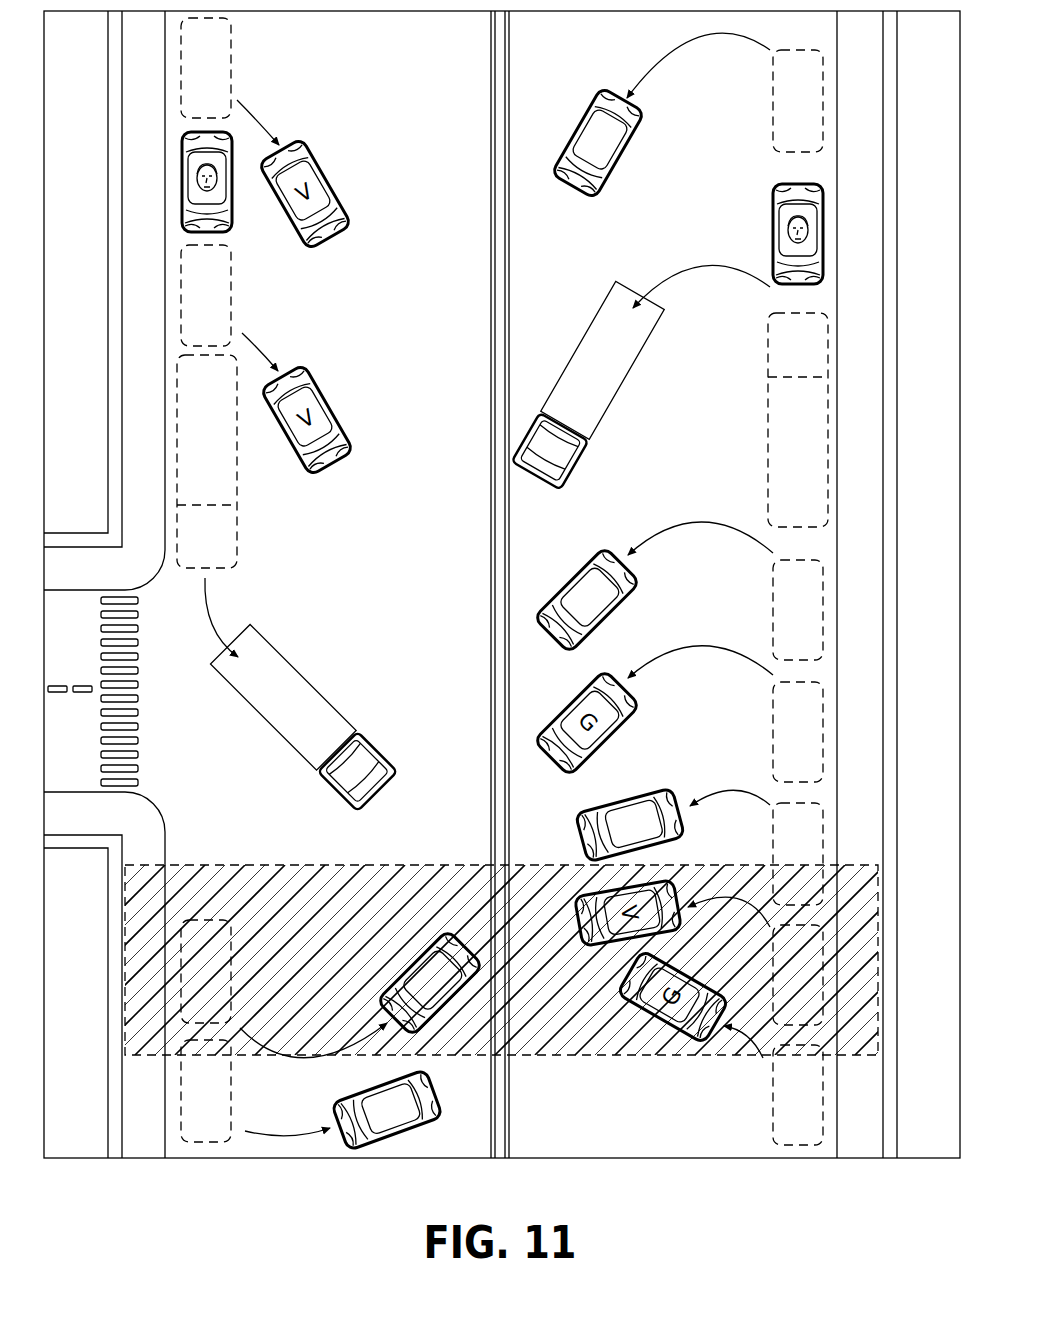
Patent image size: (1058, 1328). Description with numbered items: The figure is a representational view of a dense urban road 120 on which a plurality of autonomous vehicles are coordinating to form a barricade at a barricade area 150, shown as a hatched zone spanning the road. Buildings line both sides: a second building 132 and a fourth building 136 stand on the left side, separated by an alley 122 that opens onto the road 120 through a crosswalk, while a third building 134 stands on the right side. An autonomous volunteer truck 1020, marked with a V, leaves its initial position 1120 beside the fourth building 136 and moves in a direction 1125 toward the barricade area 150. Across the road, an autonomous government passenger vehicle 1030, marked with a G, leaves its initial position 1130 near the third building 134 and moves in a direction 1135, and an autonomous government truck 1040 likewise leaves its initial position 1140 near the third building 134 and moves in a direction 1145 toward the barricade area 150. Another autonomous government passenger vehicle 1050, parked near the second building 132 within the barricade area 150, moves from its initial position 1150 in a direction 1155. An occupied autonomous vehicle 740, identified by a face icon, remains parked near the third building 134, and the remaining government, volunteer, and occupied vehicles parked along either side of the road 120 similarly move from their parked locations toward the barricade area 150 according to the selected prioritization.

The road 120 is at (351, 113).
The alley 122 is at (63, 612).
The second building 132 is at (56, 1003).
The third building 134 is at (906, 570).
The fourth building 136 is at (56, 278).
The barricade area 150 is at (583, 1056).
The occupied autonomous vehicle 740 is at (773, 229).
The autonomous volunteer truck 1020 is at (345, 711).
The autonomous government passenger vehicle 1030 is at (593, 197).
The autonomous government truck 1040 is at (601, 430).
The autonomous government passenger vehicle 1050 is at (452, 937).
The initial position 1120 is at (237, 484).
The direction 1125 is at (217, 621).
The initial position 1130 is at (771, 114).
The direction 1135 is at (692, 42).
The initial position 1140 is at (767, 423).
The direction 1145 is at (720, 277).
The initial position 1150 is at (214, 930).
The direction 1155 is at (310, 1057).